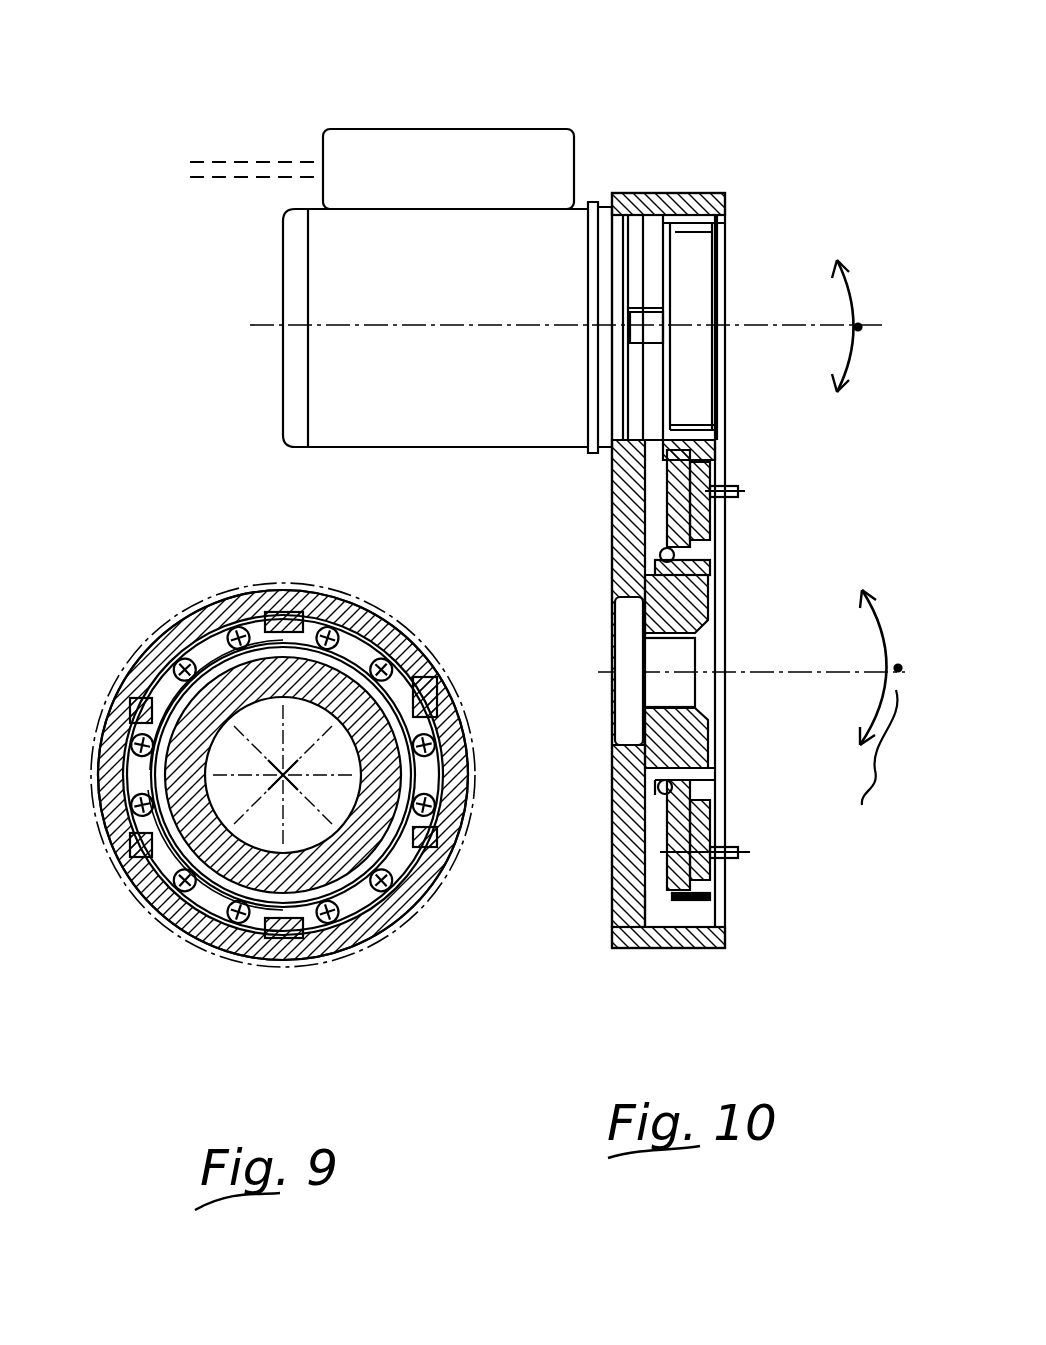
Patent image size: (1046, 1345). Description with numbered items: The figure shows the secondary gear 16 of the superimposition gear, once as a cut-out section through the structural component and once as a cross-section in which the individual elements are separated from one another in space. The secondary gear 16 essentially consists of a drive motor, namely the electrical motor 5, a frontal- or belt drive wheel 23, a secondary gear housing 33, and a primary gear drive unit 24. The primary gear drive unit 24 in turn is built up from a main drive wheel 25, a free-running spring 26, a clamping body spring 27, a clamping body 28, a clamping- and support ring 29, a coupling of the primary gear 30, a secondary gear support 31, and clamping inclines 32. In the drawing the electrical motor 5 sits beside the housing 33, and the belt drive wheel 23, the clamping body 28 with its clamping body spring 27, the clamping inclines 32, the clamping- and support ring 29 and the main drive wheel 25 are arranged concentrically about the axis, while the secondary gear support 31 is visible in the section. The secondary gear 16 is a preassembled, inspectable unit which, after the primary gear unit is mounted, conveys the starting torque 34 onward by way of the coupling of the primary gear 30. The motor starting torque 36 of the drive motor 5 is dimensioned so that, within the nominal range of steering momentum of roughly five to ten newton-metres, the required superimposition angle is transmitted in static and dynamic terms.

In FIG. 10, the electrical motor 5 is at (325, 262).
In FIG. 10, the secondary gear 16 is at (636, 92).
In FIG. 10, the frontal- or belt drive wheel 23 is at (713, 273).
In FIG. 10, the primary gear drive unit 24 is at (758, 575).
In FIG. 9, the primary gear drive unit 24 is at (87, 682).
In FIG. 10, the main drive wheel 25 is at (697, 457).
In FIG. 9, the main drive wheel 25 is at (427, 768).
In FIG. 9, the free-running spring 26 is at (312, 625).
In FIG. 9, the clamping body spring 27 is at (137, 727).
In FIG. 10, the clamping body 28 is at (717, 537).
In FIG. 9, the clamping body 28 is at (373, 663).
In FIG. 10, the clamping- and support ring 29 is at (705, 777).
In FIG. 9, the clamping- and support ring 29 is at (220, 875).
In FIG. 10, the coupling of the primary gear 30 is at (737, 862).
In FIG. 9, the coupling of the primary gear 30 is at (415, 895).
In FIG. 10, the secondary gear support 31 is at (612, 742).
In FIG. 9, the clamping inclines 32 is at (123, 787).
In FIG. 10, the secondary gear housing 33 is at (702, 585).
In FIG. 9, the secondary gear housing 33 is at (310, 865).
In FIG. 10, the starting torque 34 is at (733, 832).
In FIG. 10, the motor starting torque 36 is at (650, 318).